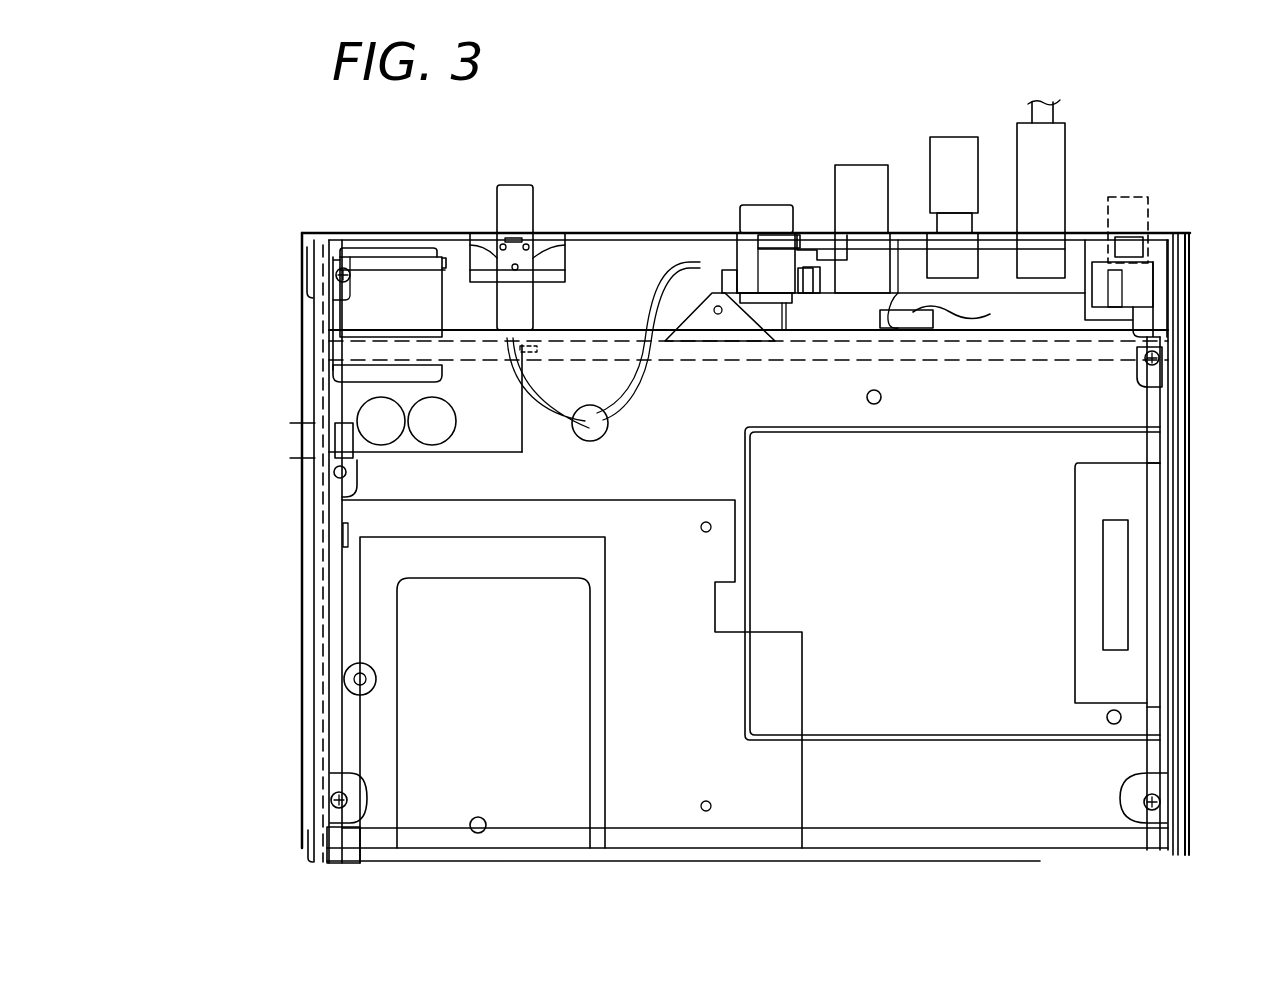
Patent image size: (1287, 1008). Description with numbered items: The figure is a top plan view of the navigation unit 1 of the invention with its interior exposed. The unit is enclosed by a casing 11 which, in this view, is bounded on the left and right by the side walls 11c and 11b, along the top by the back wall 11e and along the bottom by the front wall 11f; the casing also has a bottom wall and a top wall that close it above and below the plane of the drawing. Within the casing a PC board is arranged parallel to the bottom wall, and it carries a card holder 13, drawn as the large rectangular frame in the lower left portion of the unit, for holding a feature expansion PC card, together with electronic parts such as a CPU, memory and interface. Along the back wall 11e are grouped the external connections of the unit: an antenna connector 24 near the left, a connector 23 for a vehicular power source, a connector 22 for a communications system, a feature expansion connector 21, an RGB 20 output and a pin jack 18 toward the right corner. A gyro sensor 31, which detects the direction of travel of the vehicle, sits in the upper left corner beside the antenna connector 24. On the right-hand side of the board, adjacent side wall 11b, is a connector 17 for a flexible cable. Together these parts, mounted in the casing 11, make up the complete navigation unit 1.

The navigation unit 1 is at (298, 247).
The casing 11 is at (1195, 352).
The side wall 11b is at (1192, 672).
The side wall 11c is at (302, 625).
The back wall 11e is at (622, 232).
The front wall 11f is at (897, 860).
The card holder 13 is at (606, 708).
The connector for a flexible cable 17 is at (1116, 578).
The pin jack 18 is at (1147, 270).
The RGB output 20 is at (1057, 265).
The feature expansion connector 21 is at (945, 258).
The connector for a communications system 22 is at (862, 263).
The connector for a vehicular power source 23 is at (772, 272).
The antenna connector 24 is at (498, 240).
The gyro sensor 31 is at (402, 286).